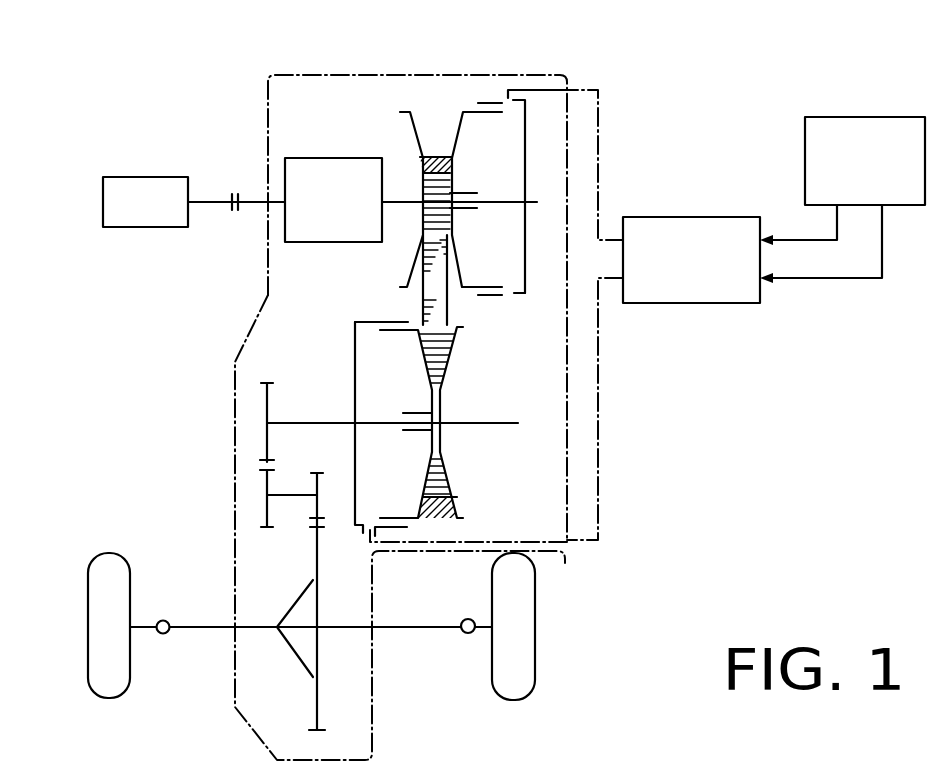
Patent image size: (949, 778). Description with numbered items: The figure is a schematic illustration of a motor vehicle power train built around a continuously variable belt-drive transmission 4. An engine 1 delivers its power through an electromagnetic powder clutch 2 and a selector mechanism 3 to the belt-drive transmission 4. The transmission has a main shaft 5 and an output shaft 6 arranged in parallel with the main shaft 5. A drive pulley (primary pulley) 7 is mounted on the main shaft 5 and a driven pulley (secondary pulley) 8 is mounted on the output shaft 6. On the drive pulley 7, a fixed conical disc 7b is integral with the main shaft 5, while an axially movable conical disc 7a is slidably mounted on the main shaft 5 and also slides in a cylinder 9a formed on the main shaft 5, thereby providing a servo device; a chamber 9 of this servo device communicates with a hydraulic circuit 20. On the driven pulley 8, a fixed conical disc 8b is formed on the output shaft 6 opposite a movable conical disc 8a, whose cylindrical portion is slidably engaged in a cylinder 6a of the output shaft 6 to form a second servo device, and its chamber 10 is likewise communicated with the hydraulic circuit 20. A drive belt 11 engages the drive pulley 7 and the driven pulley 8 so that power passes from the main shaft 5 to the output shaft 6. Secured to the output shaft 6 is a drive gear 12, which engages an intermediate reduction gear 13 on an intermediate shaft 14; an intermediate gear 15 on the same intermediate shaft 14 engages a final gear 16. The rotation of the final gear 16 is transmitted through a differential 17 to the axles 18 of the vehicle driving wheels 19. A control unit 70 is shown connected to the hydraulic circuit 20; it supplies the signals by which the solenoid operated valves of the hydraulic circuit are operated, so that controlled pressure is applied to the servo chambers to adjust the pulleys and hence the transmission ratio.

The engine 1 is at (150, 177).
The electromagnetic powder clutch 2 is at (236, 192).
The selector mechanism 3 is at (338, 158).
The continuously variable belt-drive transmission 4 is at (446, 106).
The main shaft 5 is at (394, 205).
The output shaft 6 is at (310, 422).
The cylinder of the output shaft 6a is at (375, 320).
The drive pulley (primary pulley) 7 is at (440, 156).
The movable conical disc 7a is at (470, 110).
The fixed conical disc 7b is at (412, 130).
The driven pulley (secondary pulley) 8 is at (444, 422).
The movable conical disc 8a is at (420, 337).
The fixed conical disc 8b is at (446, 366).
The chamber 9 is at (529, 224).
The cylinder 9a is at (505, 297).
The chamber 10 is at (357, 395).
The drive belt 11 is at (438, 510).
The drive gear 12 is at (268, 381).
The intermediate reduction gear 13 is at (268, 529).
The intermediate shaft 14 is at (290, 494).
The intermediate gear 15 is at (318, 472).
The final gear 16 is at (320, 730).
The differential 17 is at (300, 609).
The axles 18 is at (148, 628).
The vehicle driving wheels 19 is at (128, 578).
The hydraulic circuit 20 is at (684, 304).
The control unit 70 is at (846, 116).